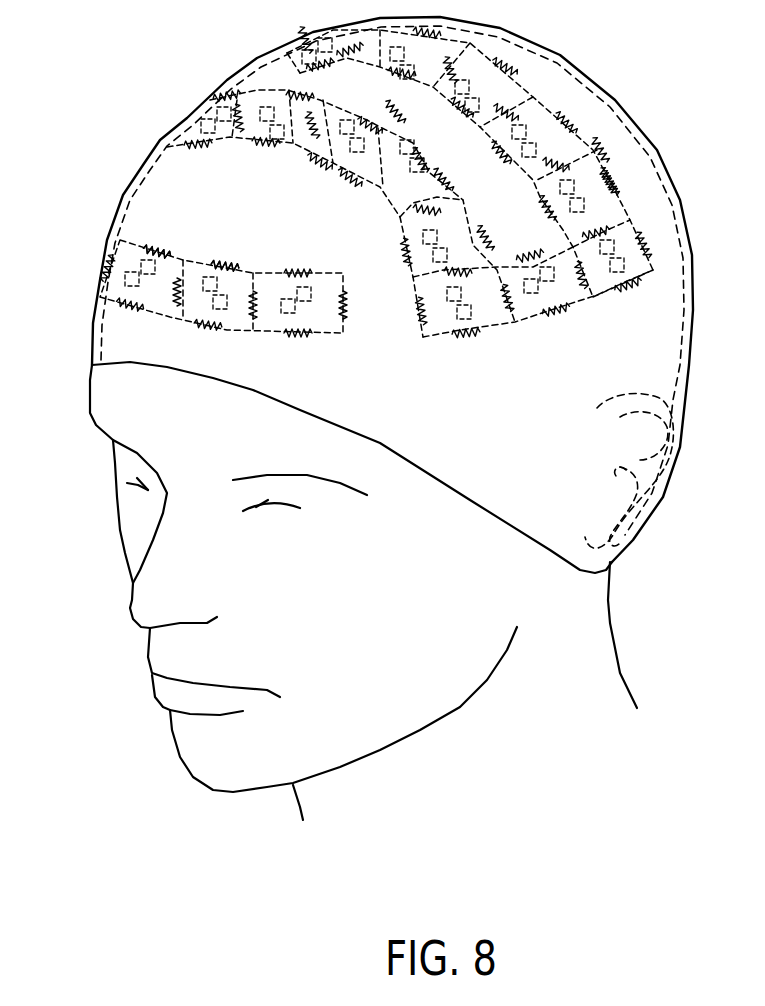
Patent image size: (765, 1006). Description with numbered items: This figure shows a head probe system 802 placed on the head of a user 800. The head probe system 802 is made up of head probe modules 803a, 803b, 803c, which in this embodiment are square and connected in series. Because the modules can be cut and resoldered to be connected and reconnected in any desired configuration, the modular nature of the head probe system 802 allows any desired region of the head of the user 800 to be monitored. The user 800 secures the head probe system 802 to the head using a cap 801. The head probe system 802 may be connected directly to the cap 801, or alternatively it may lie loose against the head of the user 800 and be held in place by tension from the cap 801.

The user 800 is at (493, 767).
The cap 801 is at (533, 440).
The head probe system 802 is at (148, 74).
The head probe module 803a is at (291, 272).
The head probe module 803b is at (239, 270).
The head probe module 803c is at (168, 252).